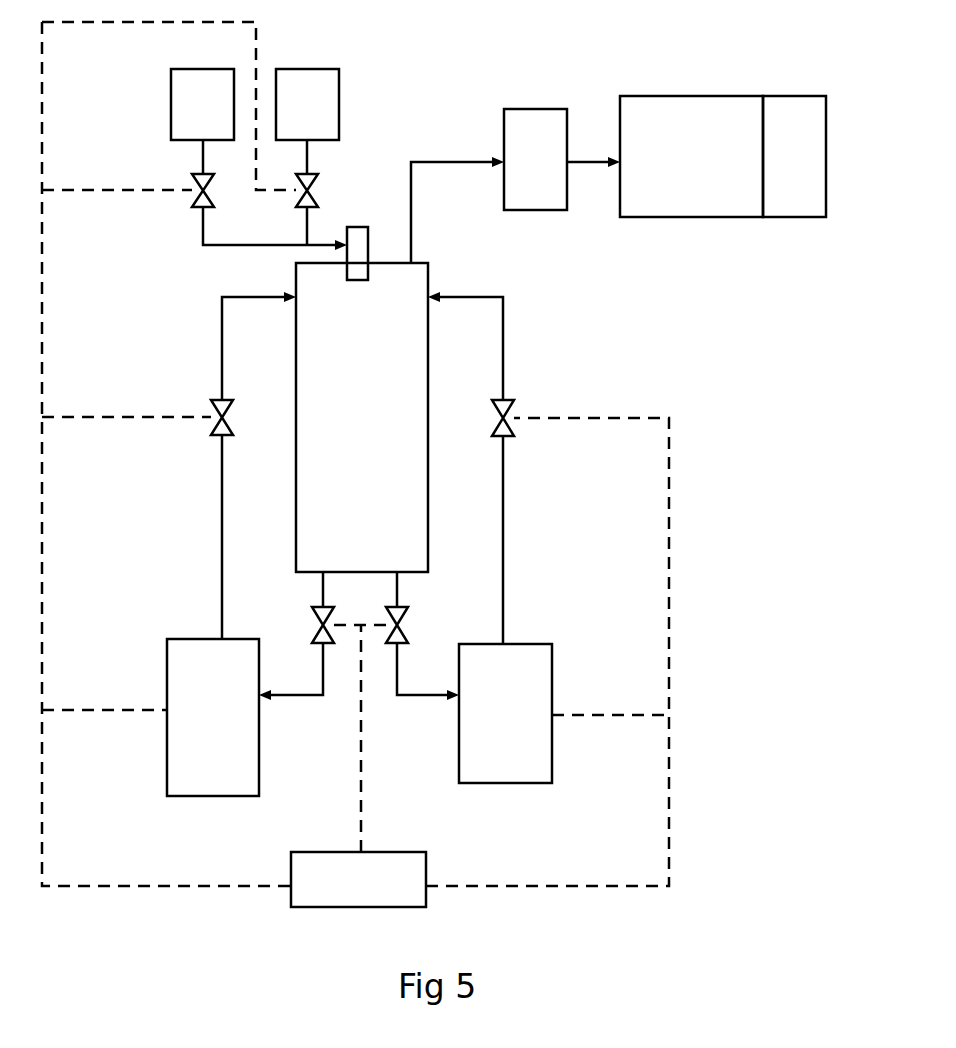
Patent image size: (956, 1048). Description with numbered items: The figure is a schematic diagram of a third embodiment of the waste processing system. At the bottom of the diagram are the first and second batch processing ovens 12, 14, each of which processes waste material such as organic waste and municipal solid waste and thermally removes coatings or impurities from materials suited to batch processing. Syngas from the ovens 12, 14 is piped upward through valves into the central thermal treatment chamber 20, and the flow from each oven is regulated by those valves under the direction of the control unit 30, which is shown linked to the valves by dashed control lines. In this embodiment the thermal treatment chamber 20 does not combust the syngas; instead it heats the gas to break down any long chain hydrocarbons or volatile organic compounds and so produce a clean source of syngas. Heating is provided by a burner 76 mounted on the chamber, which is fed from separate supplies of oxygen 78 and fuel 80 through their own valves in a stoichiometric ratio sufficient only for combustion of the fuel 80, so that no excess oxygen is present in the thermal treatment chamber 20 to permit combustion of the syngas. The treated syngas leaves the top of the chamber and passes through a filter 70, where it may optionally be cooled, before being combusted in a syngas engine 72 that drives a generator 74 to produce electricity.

The first batch processing oven 12 is at (197, 731).
The second batch processing oven 14 is at (487, 725).
The thermal treatment chamber 20 is at (346, 433).
The control unit 30 is at (342, 895).
The filter 70 is at (519, 171).
The syngas engine 72 is at (677, 171).
The generator 74 is at (779, 171).
The burner 76 is at (353, 227).
The oxygen 78 is at (187, 118).
The fuel 80 is at (291, 118).